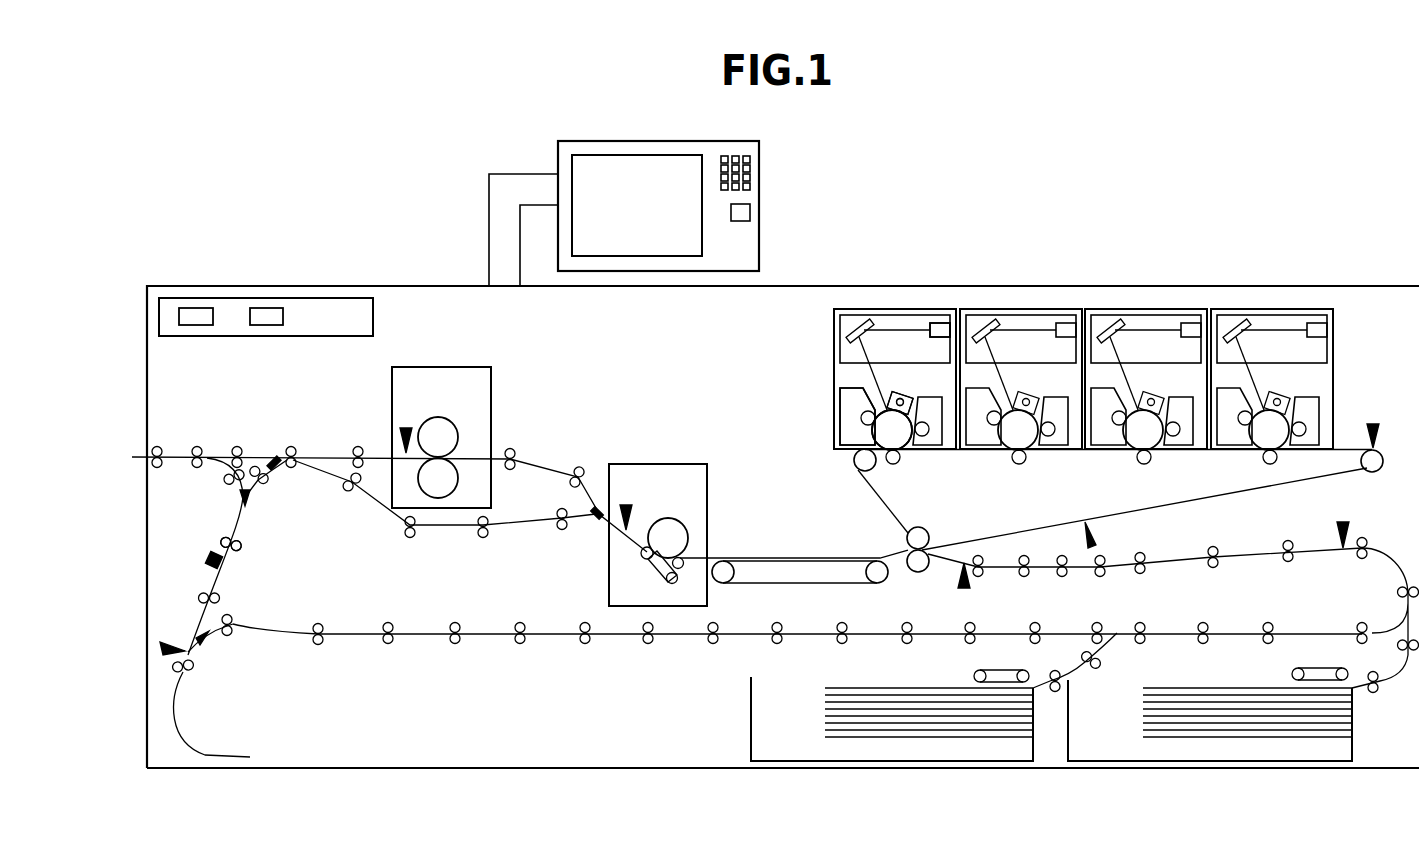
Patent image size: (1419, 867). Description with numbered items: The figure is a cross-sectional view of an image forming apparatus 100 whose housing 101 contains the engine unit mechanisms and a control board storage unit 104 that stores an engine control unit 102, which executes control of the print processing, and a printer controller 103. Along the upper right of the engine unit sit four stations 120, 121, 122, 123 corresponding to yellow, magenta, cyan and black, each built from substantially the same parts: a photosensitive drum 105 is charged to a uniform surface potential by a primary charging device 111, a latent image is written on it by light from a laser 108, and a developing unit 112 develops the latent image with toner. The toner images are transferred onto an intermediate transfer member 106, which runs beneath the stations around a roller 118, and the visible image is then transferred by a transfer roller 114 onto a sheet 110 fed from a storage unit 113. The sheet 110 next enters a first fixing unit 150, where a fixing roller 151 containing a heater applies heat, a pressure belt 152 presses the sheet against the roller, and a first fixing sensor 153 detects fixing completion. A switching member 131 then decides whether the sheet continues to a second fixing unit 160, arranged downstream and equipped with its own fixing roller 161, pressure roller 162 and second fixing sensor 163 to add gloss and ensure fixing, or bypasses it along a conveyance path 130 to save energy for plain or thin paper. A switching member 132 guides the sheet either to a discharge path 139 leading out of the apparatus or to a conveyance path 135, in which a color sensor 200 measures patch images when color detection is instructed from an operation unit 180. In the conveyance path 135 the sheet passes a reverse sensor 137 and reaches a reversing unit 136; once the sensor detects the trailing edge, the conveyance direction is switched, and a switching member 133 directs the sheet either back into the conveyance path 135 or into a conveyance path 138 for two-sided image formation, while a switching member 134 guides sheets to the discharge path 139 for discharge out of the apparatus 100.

The image forming apparatus 100 is at (1230, 206).
The housing 101 is at (1362, 284).
The engine control unit 102 is at (198, 307).
The printer controller 103 is at (268, 307).
The control board storage unit 104 is at (338, 298).
The photosensitive drum 105 is at (903, 438).
The intermediate transfer member 106 is at (998, 535).
The laser 108 is at (938, 322).
The sheet 110 is at (876, 686).
The primary charging device 111 is at (897, 395).
The developing unit 112 is at (852, 430).
The storage unit 113 is at (750, 717).
The transfer roller 114 is at (925, 574).
The drive roller 118 is at (1343, 522).
The station 120 is at (872, 308).
The station 121 is at (1025, 308).
The station 122 is at (1150, 308).
The station 123 is at (1275, 308).
The conveyance path 130 is at (448, 530).
The switching member 131 is at (600, 528).
The switching member 132 is at (283, 452).
The switching member 133 is at (207, 640).
The switching member 134 is at (247, 505).
The conveyance path 135 is at (233, 558).
The reversing unit 136 is at (193, 743).
The reverse sensor 137 is at (173, 645).
The conveyance path 138 is at (357, 631).
The discharge path 139 is at (179, 447).
The first fixing unit 150 is at (686, 463).
The fixing roller 151 is at (663, 518).
The pressure belt 152 is at (652, 580).
The first fixing sensor 153 is at (622, 500).
The second fixing unit 160 is at (438, 366).
The fixing roller 161 is at (440, 417).
The pressure roller 162 is at (458, 478).
The second fixing sensor 163 is at (403, 430).
The operation unit 180 is at (558, 154).
The color sensor 200 is at (206, 563).